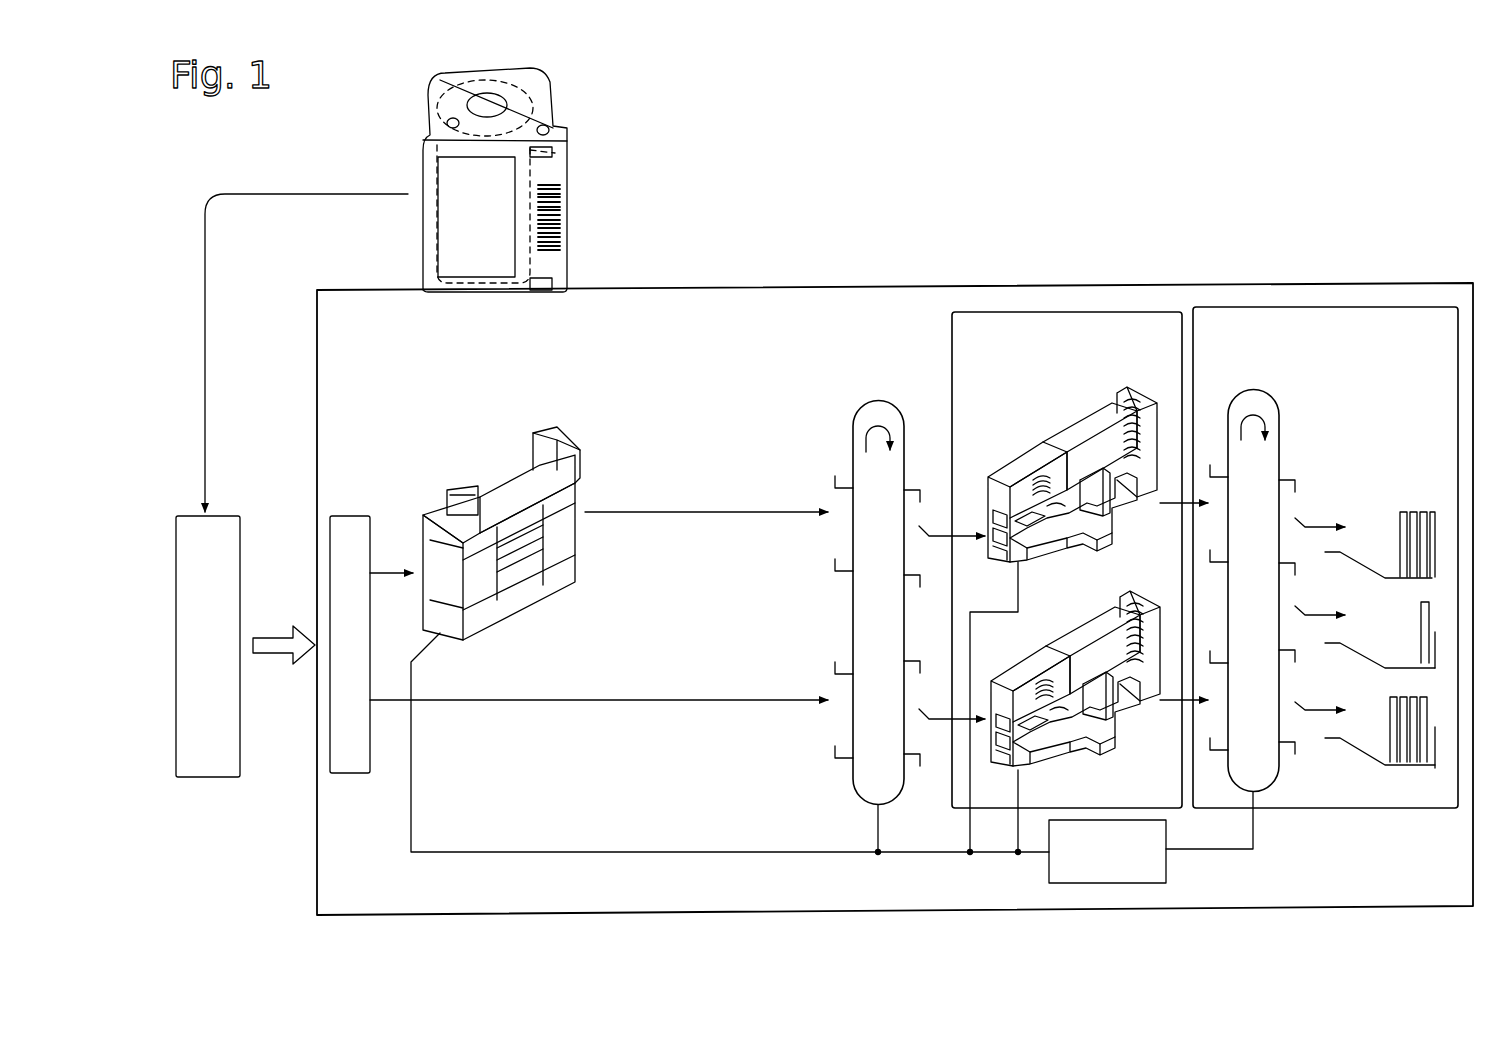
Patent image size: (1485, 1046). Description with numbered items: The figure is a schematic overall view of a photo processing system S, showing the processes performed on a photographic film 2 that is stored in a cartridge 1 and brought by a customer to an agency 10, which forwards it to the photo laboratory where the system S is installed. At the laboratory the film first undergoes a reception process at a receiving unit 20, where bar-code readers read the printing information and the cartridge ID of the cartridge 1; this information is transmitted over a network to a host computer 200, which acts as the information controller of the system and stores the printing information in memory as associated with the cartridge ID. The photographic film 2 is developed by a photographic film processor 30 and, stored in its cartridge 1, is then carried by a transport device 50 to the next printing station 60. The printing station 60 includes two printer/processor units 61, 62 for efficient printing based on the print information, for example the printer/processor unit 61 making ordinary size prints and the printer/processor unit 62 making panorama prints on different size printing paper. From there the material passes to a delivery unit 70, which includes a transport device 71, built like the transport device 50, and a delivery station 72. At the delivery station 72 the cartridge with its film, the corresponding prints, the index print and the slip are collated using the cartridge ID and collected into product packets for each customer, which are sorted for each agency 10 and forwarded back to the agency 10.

The cartridge 1 is at (547, 83).
The photographic film 2 is at (533, 176).
The photo processing system S is at (952, 288).
The agency 10 is at (240, 540).
The receiving unit 20 is at (350, 516).
The photographic film processor 30 is at (482, 463).
The transport device 50 is at (878, 395).
The printing station 60 is at (1099, 312).
The printer/processor unit 61 is at (1056, 432).
The printer/processor unit 62 is at (1073, 642).
The delivery unit 70 is at (1335, 307).
The transport device 71 is at (1280, 425).
The delivery station 72 is at (1408, 476).
The host computer 200 is at (1168, 880).